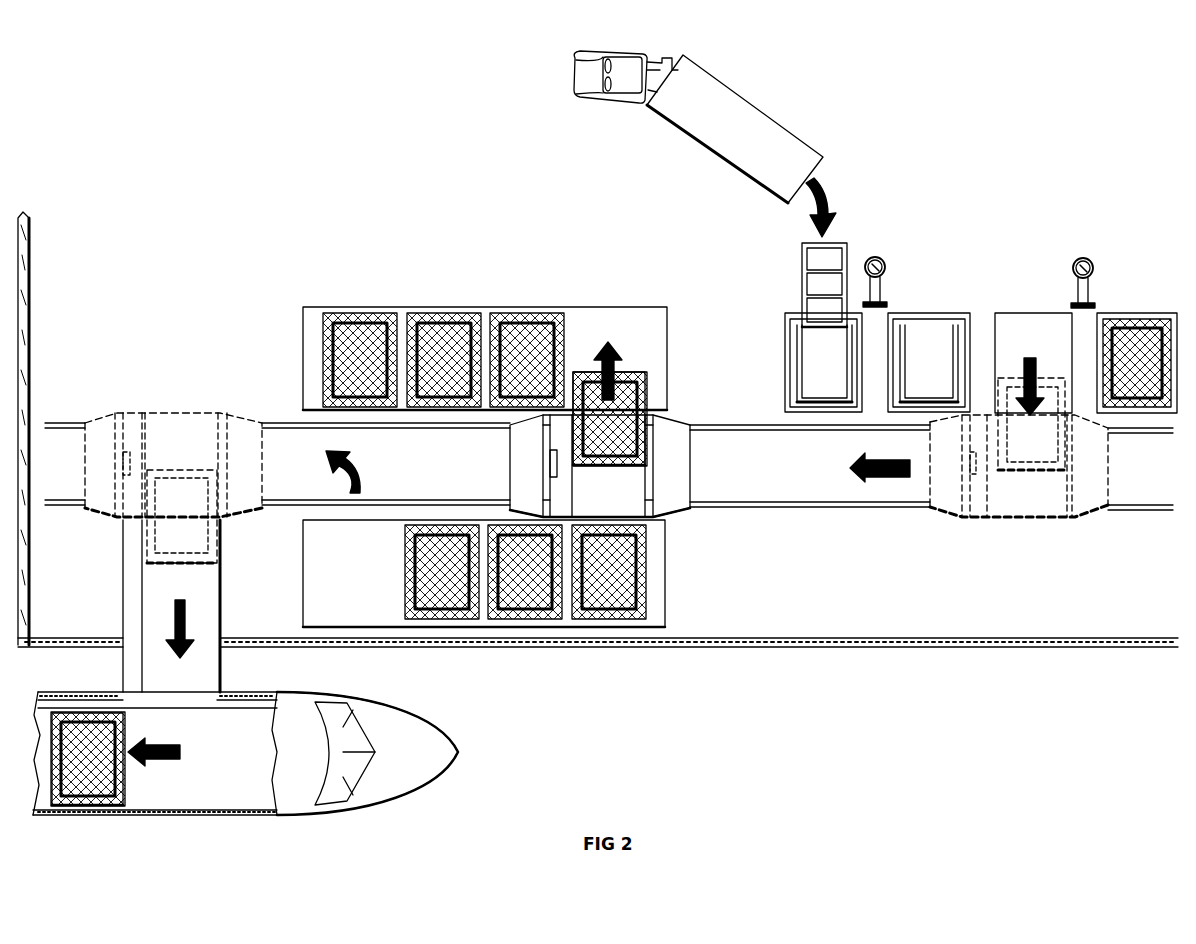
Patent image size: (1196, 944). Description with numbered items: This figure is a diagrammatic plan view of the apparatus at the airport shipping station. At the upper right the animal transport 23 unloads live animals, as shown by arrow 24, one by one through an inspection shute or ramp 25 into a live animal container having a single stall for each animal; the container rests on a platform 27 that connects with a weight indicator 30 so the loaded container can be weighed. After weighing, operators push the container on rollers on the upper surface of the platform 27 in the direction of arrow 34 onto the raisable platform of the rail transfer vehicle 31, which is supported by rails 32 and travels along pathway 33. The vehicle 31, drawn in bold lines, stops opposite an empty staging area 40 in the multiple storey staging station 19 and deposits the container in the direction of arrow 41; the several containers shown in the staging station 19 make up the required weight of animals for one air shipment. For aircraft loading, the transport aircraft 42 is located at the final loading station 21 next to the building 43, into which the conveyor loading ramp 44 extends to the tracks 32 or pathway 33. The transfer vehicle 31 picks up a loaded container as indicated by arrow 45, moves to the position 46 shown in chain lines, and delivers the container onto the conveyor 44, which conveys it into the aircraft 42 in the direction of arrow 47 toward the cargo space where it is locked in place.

The multiple storey staging station 19 is at (485, 429).
The final loading station 21 is at (305, 677).
The animal transport 23 is at (750, 106).
The arrow 24 is at (833, 195).
The inspection shute or ramp 25 is at (802, 245).
The platform 27 is at (783, 377).
The weight indicator 30 is at (886, 264).
The rail transfer vehicle 31 is at (675, 510).
The rails 32 is at (400, 427).
The pathway 33 is at (857, 462).
The arrow 34 is at (1043, 356).
The empty staging area 40 is at (627, 307).
The arrow 41 is at (613, 350).
The transport aircraft 42 is at (228, 817).
The building 43 is at (778, 650).
The conveyor loading ramp 44 is at (222, 602).
The arrow 45 is at (364, 463).
The position of transport vehicle 46 is at (188, 412).
The arrow 47 is at (167, 759).